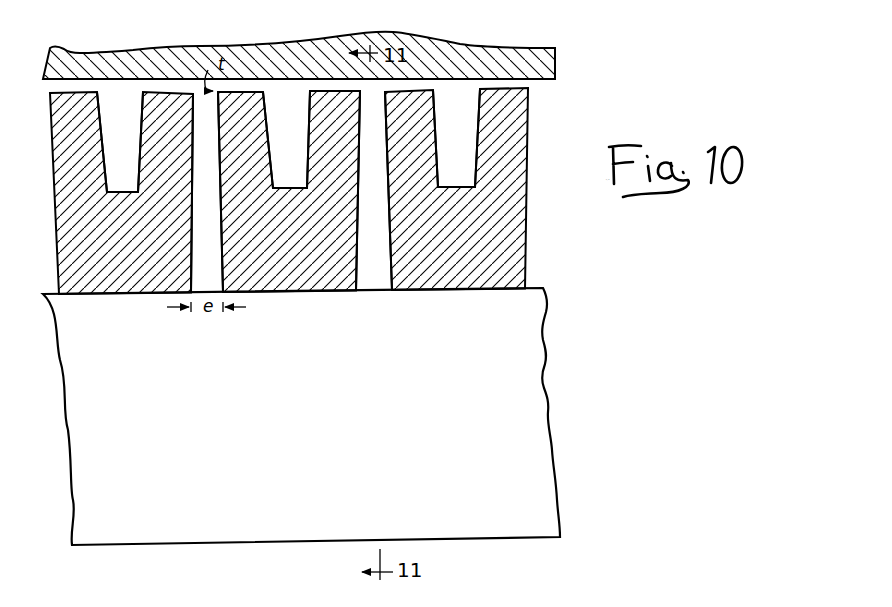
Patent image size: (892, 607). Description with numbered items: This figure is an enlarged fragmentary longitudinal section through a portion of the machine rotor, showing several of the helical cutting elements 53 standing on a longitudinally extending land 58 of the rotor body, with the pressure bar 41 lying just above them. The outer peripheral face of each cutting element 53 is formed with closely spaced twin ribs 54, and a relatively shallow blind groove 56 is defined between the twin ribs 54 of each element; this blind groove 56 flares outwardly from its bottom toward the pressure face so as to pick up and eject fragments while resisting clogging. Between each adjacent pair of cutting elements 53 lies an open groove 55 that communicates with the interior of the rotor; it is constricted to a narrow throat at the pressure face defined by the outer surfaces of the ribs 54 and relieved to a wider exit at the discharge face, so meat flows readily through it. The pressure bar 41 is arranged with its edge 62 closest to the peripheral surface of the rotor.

The pressure bar 41 is at (545, 62).
The lower left corner edge 62 is at (535, 80).
The cutting elements 53 is at (120, 268).
The twin ribs 54 is at (155, 148).
The open groove 55 is at (202, 128).
The blind groove 56 is at (118, 107).
The lands 58 is at (527, 398).